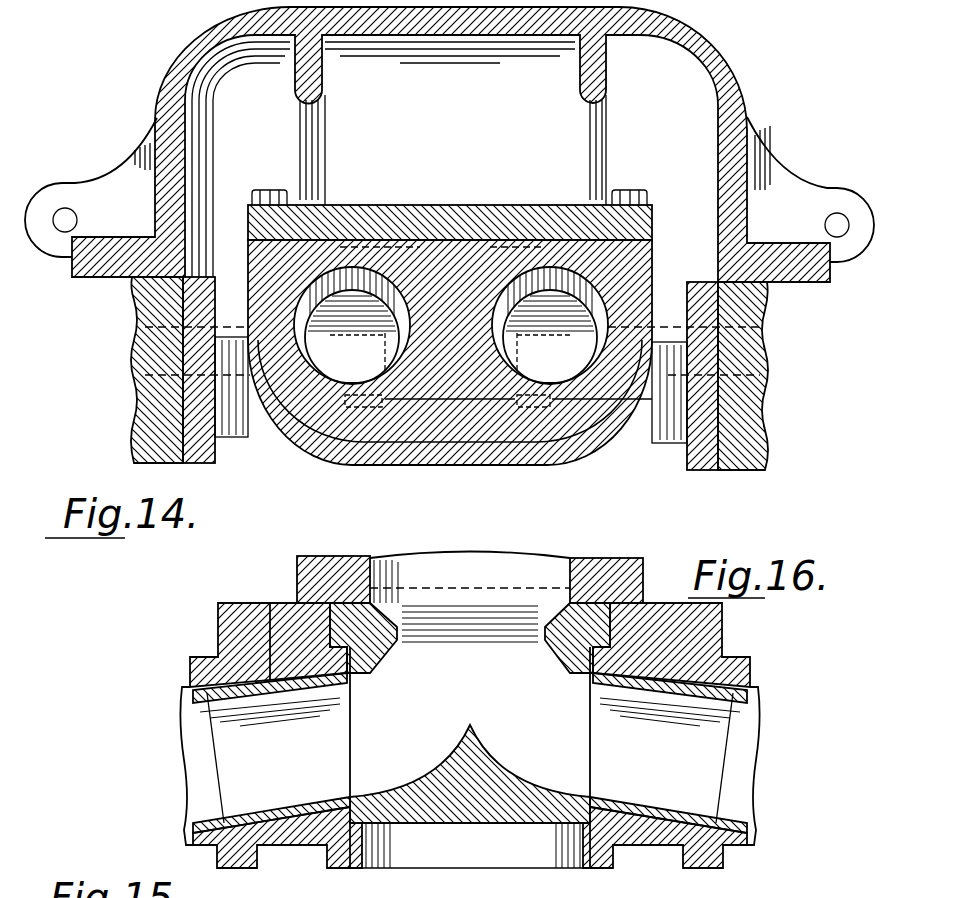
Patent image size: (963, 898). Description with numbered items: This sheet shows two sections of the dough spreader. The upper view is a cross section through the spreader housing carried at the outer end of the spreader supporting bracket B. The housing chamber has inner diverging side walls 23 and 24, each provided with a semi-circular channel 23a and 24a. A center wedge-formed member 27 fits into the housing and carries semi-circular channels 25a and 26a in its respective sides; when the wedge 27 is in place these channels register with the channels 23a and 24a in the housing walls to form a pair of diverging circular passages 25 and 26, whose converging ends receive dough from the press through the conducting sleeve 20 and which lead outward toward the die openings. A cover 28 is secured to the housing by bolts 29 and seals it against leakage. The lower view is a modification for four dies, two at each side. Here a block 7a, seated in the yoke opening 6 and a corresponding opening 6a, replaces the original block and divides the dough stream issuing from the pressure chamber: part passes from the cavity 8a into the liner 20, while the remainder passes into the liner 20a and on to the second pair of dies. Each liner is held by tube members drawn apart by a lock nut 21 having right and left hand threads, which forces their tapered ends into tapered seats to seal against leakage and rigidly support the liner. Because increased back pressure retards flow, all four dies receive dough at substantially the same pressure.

In FIG. 14, the spreader supporting bracket B is at (747, 97).
In FIG. 14, the cover 28 is at (518, 210).
In FIG. 14, the bolts 29 is at (630, 190).
In FIG. 14, the center wedge-formed member 27 is at (460, 380).
In FIG. 14, the diverging circular passage 25 is at (350, 350).
In FIG. 14, the semi-circular channel 25a is at (390, 340).
In FIG. 14, the diverging circular passage 26 is at (552, 335).
In FIG. 14, the semi-circular channel 26a is at (513, 335).
In FIG. 14, the inner diverging side wall 23 is at (260, 327).
In FIG. 14, the semi-circular channel 23a is at (317, 333).
In FIG. 14, the inner diverging side wall 24 is at (617, 290).
In FIG. 14, the semi-circular channel 24a is at (630, 388).
In FIG. 16, the cavity 8a is at (473, 660).
In FIG. 16, the block 7a is at (484, 765).
In FIG. 16, the central opening 6 is at (240, 615).
In FIG. 16, the sleeve 20 is at (270, 603).
In FIG. 16, the central opening 6a is at (703, 637).
In FIG. 16, the liner 20a is at (722, 650).
In FIG. 16, the lock nut 21 is at (283, 897).